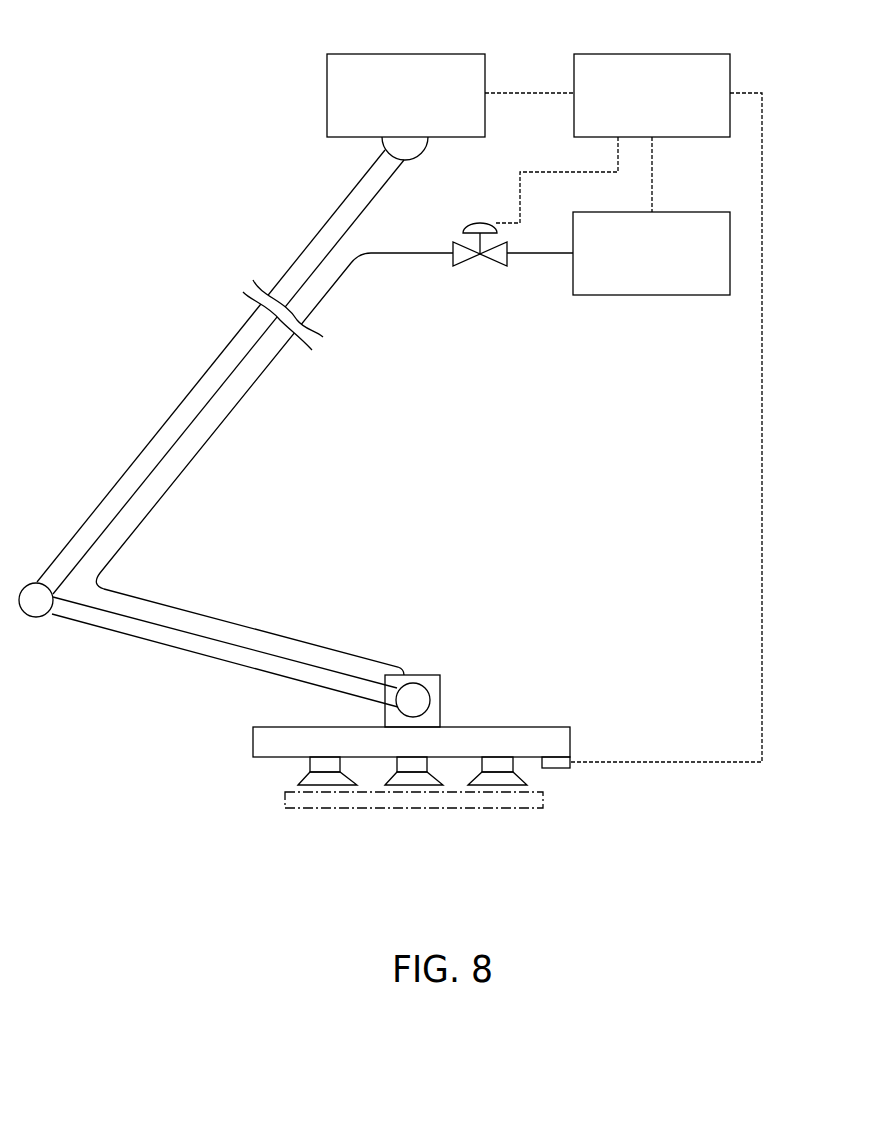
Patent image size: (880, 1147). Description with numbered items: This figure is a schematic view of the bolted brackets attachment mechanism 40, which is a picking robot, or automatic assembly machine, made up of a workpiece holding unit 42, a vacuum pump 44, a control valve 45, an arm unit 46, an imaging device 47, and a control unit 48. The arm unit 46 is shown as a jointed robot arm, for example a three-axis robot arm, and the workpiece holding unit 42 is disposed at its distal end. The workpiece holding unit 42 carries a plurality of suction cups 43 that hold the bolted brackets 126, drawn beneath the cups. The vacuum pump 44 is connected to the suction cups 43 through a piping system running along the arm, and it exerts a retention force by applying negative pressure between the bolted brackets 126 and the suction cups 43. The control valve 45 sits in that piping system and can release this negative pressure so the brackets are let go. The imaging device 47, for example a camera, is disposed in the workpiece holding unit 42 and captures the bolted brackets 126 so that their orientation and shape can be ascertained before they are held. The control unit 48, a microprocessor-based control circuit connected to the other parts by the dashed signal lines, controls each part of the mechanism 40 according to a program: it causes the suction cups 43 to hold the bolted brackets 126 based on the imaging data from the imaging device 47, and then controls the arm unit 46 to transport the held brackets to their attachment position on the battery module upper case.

The bolted brackets attachment mechanism 40 is at (102, 43).
The workpiece holding unit 42 is at (218, 737).
The suction cups 43 is at (303, 772).
The vacuum pump 44 is at (657, 296).
The control valve 45 is at (485, 263).
The arm unit 46 is at (195, 383).
The imaging device 47 is at (558, 768).
The control unit 48 is at (573, 105).
The bolted brackets 126 is at (415, 808).